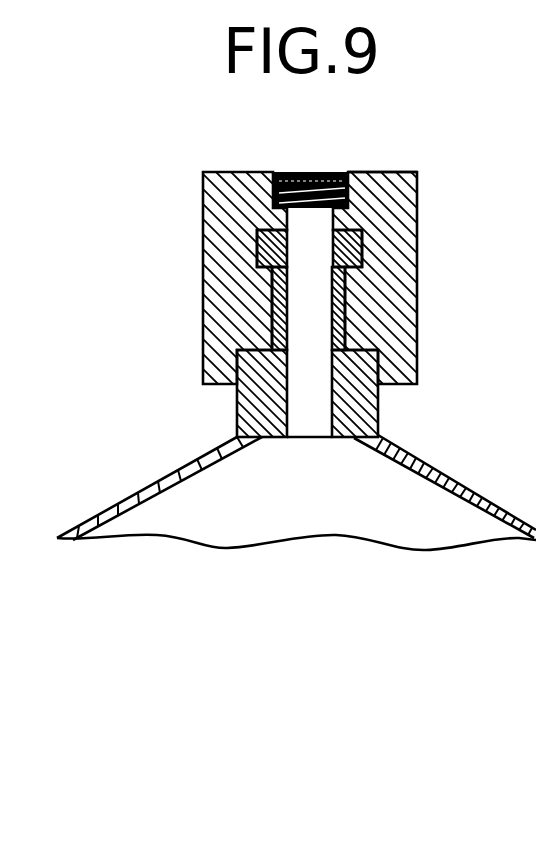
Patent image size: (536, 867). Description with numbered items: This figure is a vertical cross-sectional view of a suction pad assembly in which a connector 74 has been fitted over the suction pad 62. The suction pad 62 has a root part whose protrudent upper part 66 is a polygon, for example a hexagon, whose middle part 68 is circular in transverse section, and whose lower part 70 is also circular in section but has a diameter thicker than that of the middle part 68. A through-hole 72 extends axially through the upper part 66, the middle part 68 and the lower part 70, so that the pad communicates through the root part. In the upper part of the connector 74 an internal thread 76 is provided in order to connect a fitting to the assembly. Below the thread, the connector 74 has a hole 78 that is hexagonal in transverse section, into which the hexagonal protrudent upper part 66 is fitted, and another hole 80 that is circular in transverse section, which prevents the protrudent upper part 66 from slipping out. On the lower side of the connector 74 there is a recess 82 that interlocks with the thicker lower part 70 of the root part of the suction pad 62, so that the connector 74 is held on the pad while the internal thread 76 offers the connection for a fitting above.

The suction pad 62 is at (412, 435).
The upper part 66 is at (262, 247).
The middle part 68 is at (276, 317).
The lower part 70 is at (240, 372).
The through-hole 72 is at (303, 228).
The connector 74 is at (200, 215).
The internal thread 76 is at (360, 173).
The hole 78 is at (360, 243).
The hole 80 is at (347, 307).
The recess 82 is at (377, 363).